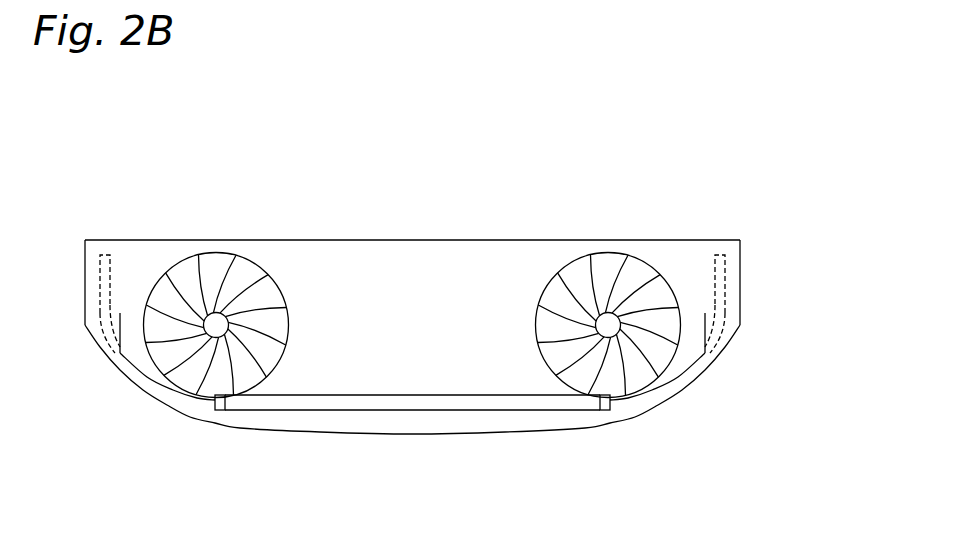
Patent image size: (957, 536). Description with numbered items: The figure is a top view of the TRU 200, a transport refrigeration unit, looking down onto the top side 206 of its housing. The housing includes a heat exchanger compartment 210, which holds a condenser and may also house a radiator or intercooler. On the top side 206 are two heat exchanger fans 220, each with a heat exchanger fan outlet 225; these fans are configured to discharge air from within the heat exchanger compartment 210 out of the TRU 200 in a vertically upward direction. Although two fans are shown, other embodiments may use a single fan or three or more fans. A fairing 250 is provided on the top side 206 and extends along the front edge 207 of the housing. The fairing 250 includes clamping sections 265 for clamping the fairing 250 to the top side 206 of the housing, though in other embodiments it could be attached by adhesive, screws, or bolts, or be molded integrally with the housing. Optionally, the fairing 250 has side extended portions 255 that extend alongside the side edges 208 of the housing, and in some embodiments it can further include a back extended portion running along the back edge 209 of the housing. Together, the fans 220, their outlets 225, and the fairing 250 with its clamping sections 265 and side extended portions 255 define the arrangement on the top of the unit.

The TRU 200 is at (645, 138).
The top side 206 is at (417, 257).
The front edge 207 is at (437, 437).
The side edges 208 is at (85, 250).
The back edge 209 is at (353, 240).
The heat exchanger compartment 210 is at (690, 392).
The heat exchanger fans 220 is at (192, 268).
The heat exchanger fan outlets 225 is at (247, 270).
The fairing 250 is at (355, 412).
The side extended portions 255 is at (100, 280).
The clamping sections 265 is at (222, 408).